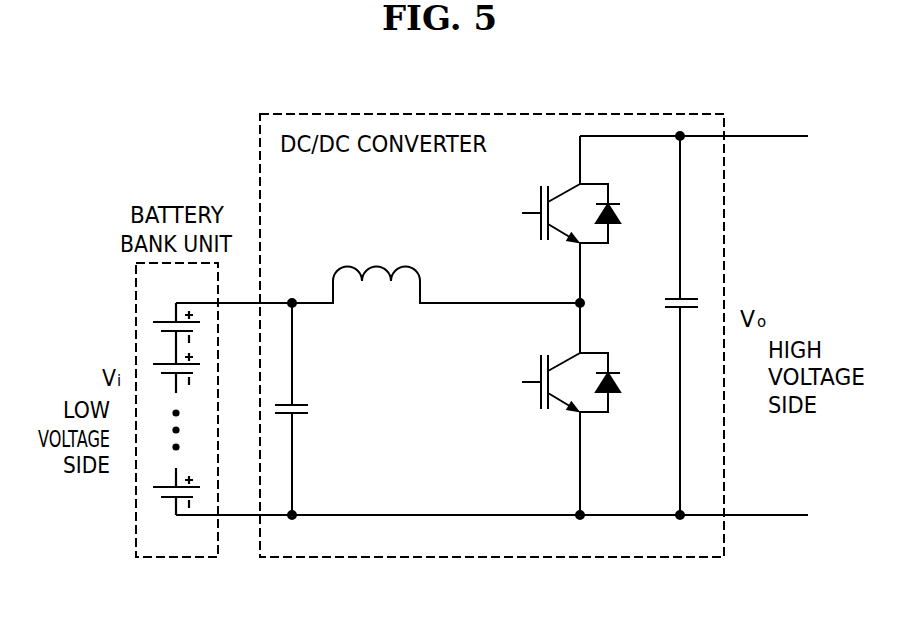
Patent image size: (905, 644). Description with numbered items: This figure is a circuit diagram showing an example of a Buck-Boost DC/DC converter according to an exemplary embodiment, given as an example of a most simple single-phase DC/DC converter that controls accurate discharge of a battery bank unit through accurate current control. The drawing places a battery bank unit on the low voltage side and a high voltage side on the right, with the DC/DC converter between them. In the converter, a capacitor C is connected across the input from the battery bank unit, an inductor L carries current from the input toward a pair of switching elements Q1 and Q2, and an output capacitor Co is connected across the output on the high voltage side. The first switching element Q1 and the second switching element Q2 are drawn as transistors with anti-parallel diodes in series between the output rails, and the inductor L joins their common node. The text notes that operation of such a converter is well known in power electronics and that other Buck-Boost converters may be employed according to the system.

The first switching element (IGBT with anti-parallel diode) Q1 is at (556, 219).
The second switching element (IGBT with anti-parallel diode) Q2 is at (556, 409).
The inductor L is at (436, 270).
The input capacitor C is at (303, 409).
The output capacitor Co is at (666, 325).